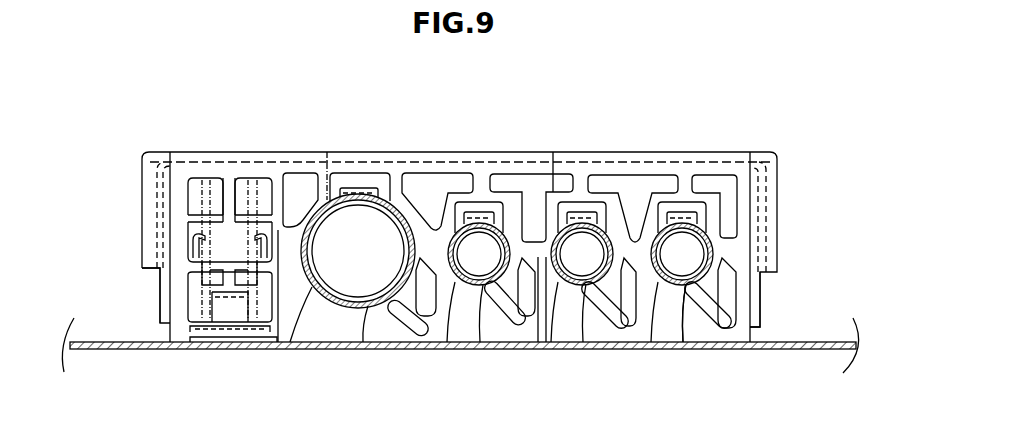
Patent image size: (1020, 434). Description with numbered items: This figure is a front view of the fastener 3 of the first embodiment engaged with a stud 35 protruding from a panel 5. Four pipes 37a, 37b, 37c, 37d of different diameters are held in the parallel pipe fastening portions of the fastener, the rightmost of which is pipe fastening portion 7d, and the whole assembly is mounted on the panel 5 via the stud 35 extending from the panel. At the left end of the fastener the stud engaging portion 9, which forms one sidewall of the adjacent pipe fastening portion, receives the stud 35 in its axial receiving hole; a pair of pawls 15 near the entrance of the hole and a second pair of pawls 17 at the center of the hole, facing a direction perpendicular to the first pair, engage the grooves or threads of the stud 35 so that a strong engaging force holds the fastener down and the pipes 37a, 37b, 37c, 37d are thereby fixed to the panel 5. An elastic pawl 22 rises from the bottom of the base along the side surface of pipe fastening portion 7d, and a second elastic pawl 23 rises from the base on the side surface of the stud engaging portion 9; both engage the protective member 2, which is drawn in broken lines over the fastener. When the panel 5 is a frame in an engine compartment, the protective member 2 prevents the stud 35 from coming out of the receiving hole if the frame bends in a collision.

The protective member 2 is at (232, 160).
The fastener 3 is at (452, 204).
The panel 5 is at (313, 343).
The pipe fastening portion 7d is at (684, 318).
The stud engaging portion 9 is at (176, 343).
The pawls 15 is at (239, 330).
The pawls 17 is at (199, 240).
The elastic pawl 22 is at (763, 277).
The second elastic pawl 23 is at (152, 283).
The stud 35 is at (176, 251).
The pipe 37a is at (369, 310).
The pipe 37b is at (466, 300).
The pipe 37c is at (573, 290).
The pipe 37d is at (672, 320).